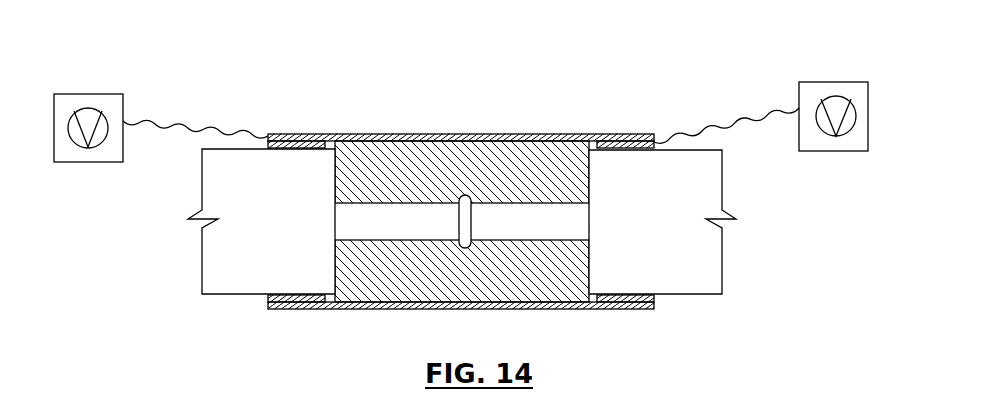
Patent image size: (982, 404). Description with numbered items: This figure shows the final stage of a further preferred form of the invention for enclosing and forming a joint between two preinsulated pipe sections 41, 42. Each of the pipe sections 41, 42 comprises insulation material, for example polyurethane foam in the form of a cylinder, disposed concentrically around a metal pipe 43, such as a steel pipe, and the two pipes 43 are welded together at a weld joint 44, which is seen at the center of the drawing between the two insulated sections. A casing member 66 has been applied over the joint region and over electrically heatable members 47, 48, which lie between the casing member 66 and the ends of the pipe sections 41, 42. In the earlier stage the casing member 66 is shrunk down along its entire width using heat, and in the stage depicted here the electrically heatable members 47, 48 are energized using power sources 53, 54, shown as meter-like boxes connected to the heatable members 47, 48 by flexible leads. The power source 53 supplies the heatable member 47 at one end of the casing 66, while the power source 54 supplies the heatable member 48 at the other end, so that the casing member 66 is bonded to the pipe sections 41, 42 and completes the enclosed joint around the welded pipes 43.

The preinsulated pipe section 41 is at (242, 280).
The preinsulated pipe section 42 is at (679, 278).
The pipe 43 is at (398, 228).
The weld joint 44 is at (465, 248).
The electrically heatable member 47 is at (290, 148).
The electrically heatable member 48 is at (623, 149).
The power source 53 is at (97, 93).
The power source 54 is at (838, 82).
The casing member 66 is at (452, 133).